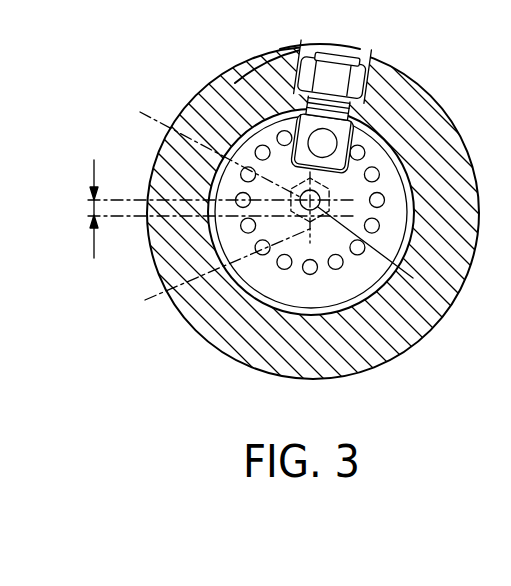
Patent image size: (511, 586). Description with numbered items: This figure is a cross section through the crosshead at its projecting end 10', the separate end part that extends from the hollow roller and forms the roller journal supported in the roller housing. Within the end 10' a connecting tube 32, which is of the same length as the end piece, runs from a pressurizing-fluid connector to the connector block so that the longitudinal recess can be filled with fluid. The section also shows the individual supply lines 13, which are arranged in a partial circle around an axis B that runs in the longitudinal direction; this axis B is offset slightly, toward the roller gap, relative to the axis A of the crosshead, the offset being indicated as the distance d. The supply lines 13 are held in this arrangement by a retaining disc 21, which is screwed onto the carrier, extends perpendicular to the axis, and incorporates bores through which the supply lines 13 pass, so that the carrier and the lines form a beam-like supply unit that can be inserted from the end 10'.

The projecting end 10' is at (247, 44).
The connecting tube 32 is at (443, 300).
The retaining disc 21 is at (277, 294).
The supply line 13 is at (310, 274).
The axis of the crosshead A is at (217, 274).
The axis B is at (209, 147).
The eccentricity distance d is at (94, 207).